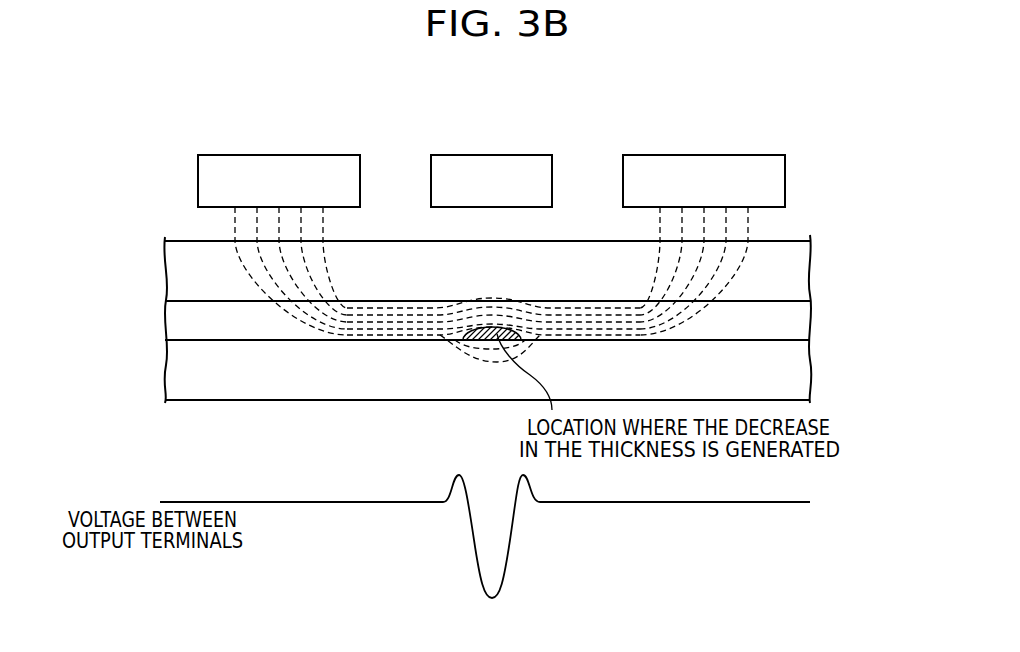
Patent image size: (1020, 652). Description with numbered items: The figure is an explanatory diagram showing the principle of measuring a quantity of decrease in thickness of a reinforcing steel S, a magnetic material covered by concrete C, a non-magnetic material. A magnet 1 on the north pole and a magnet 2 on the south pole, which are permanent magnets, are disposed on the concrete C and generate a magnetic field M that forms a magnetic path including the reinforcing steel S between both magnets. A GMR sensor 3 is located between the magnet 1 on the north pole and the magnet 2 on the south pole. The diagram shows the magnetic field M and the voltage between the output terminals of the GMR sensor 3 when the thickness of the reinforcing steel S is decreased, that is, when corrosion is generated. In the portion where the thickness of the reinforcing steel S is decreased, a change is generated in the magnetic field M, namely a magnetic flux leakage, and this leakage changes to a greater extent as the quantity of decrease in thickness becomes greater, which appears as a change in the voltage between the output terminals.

The magnet on the north pole 1 is at (282, 155).
The magnet on the south pole 2 is at (707, 155).
The GMR sensor 3 is at (493, 155).
The magnetic field M is at (333, 270).
The concrete C is at (803, 263).
The reinforcing steel S is at (803, 318).